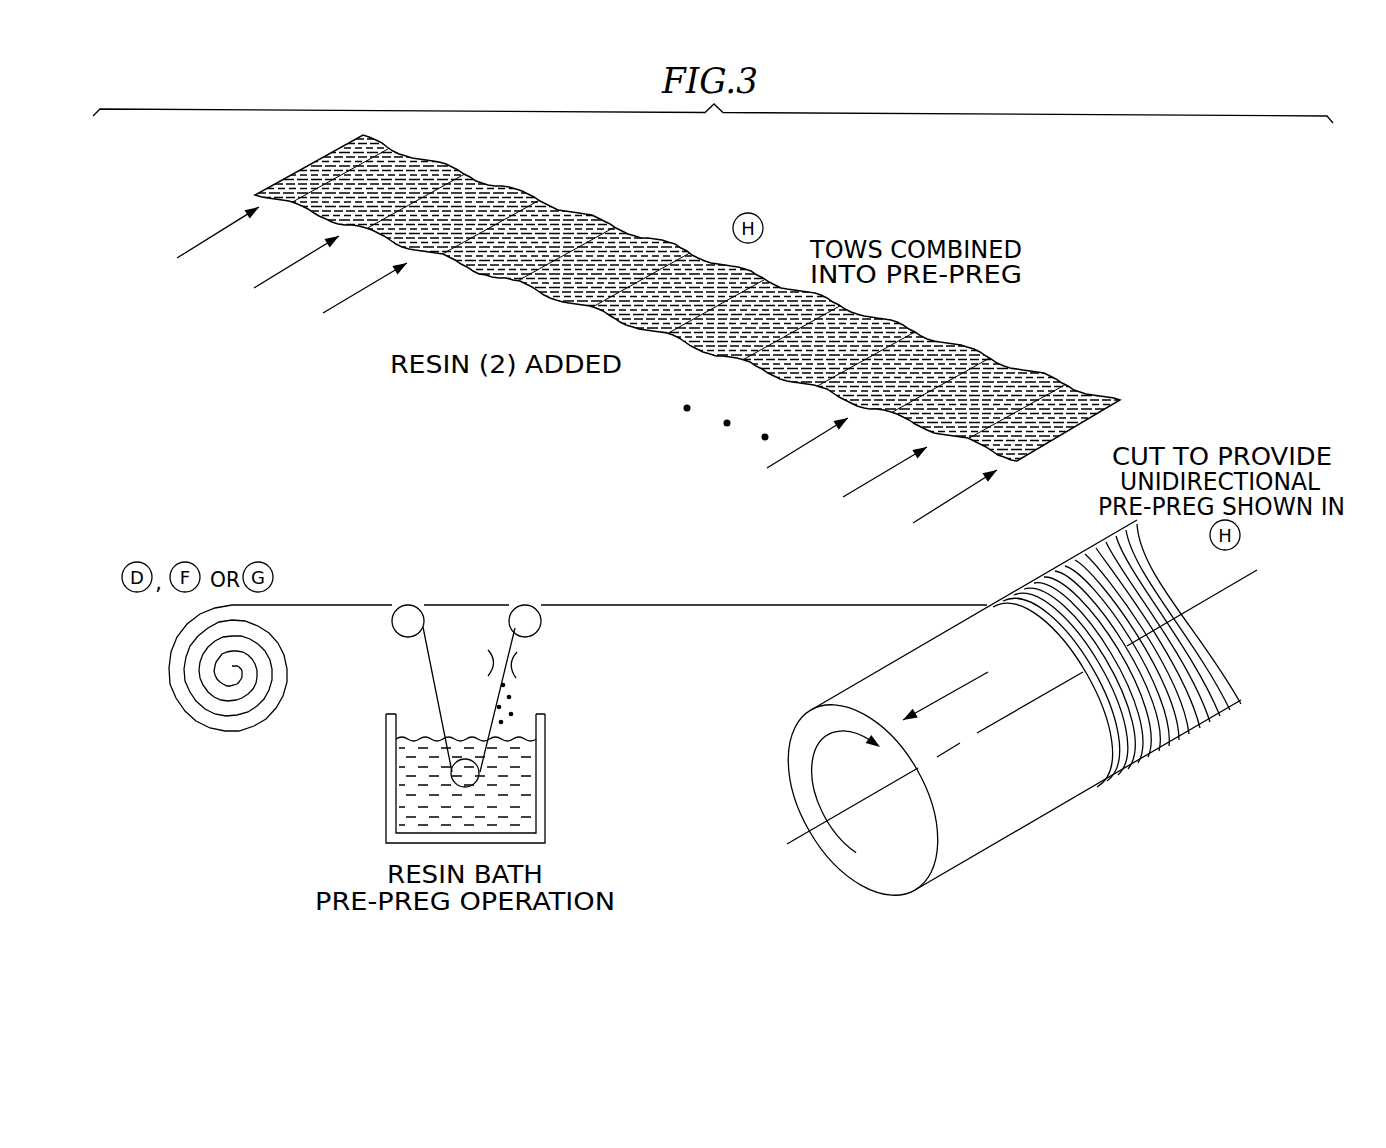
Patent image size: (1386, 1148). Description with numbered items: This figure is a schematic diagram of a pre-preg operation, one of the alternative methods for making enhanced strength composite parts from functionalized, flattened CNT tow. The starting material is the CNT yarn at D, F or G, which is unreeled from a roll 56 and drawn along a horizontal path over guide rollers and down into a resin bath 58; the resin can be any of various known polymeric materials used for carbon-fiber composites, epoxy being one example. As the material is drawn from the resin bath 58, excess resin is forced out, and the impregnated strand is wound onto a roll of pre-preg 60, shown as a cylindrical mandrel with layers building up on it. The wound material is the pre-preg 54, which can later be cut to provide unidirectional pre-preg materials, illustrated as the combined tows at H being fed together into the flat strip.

The pre-preg 54 is at (547, 199).
The roll 56 is at (232, 742).
The resin (2) bath 58 is at (380, 808).
The roll of pre-preg 60 is at (973, 822).